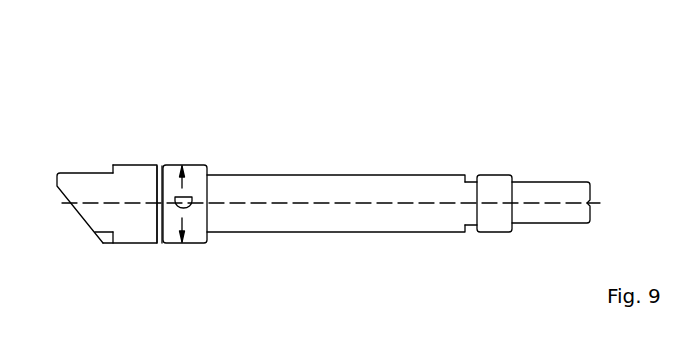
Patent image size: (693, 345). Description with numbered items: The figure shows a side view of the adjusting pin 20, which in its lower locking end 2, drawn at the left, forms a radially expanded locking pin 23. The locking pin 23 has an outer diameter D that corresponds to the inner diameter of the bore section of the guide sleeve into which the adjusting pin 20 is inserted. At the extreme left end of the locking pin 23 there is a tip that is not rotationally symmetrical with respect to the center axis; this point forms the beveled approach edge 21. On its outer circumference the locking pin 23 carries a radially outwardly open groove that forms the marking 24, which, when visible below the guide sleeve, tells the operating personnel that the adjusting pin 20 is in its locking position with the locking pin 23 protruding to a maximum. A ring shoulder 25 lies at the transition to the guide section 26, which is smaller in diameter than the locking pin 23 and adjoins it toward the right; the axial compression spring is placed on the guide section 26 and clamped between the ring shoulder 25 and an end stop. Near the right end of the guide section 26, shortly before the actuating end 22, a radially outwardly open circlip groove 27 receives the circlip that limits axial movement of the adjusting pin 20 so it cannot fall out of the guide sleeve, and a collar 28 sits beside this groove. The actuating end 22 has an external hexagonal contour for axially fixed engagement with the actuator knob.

The locking end 2 is at (218, 67).
The adjusting pin 20 is at (400, 132).
The beveled approach edge 21 is at (66, 199).
The actuating end 22 is at (590, 83).
The locking pin 23 is at (183, 165).
The marking 24 is at (162, 243).
The ring shoulder 25 is at (210, 170).
The guide section 26 is at (331, 232).
The circlip groove 27 is at (472, 227).
The collar 28 is at (493, 175).